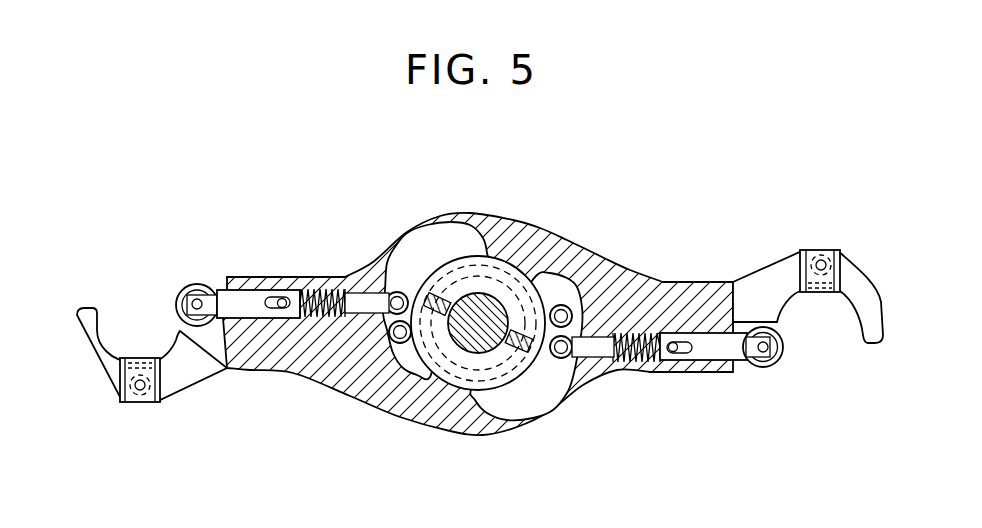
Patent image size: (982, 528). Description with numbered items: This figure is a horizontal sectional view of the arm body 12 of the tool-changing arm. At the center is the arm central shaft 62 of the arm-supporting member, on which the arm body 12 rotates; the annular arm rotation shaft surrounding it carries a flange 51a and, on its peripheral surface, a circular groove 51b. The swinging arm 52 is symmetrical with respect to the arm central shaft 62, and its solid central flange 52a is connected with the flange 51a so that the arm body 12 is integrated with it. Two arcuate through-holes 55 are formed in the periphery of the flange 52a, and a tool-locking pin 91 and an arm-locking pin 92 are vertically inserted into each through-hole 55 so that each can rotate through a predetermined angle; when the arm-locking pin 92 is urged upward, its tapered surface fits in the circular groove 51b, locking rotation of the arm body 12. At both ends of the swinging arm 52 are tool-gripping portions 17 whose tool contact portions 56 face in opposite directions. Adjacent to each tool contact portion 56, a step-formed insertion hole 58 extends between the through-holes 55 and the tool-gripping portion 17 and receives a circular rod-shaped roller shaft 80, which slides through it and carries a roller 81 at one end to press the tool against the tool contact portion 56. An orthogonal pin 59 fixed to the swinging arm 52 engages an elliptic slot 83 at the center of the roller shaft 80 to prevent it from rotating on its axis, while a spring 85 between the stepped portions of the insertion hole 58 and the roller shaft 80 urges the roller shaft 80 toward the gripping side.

The arm body 12 is at (663, 193).
The tool-gripping portion 17 is at (116, 401).
The flange 51a is at (507, 263).
The circular groove 51b is at (567, 303).
The swinging arm 52 is at (656, 272).
The flange 52a is at (459, 256).
The arcuate through-hole 55 is at (428, 252).
The tool contact portion 56 is at (106, 334).
The step-formed insertion hole 58 is at (703, 360).
The orthogonal pin 59 is at (676, 353).
The arm central shaft 62 is at (467, 355).
The roller shaft 80 is at (735, 355).
The roller 81 is at (769, 368).
The elliptic slot 83 is at (686, 356).
The spring 85 is at (624, 372).
The tool-locking pin 91 is at (383, 290).
The arm-locking pin 92 is at (586, 298).